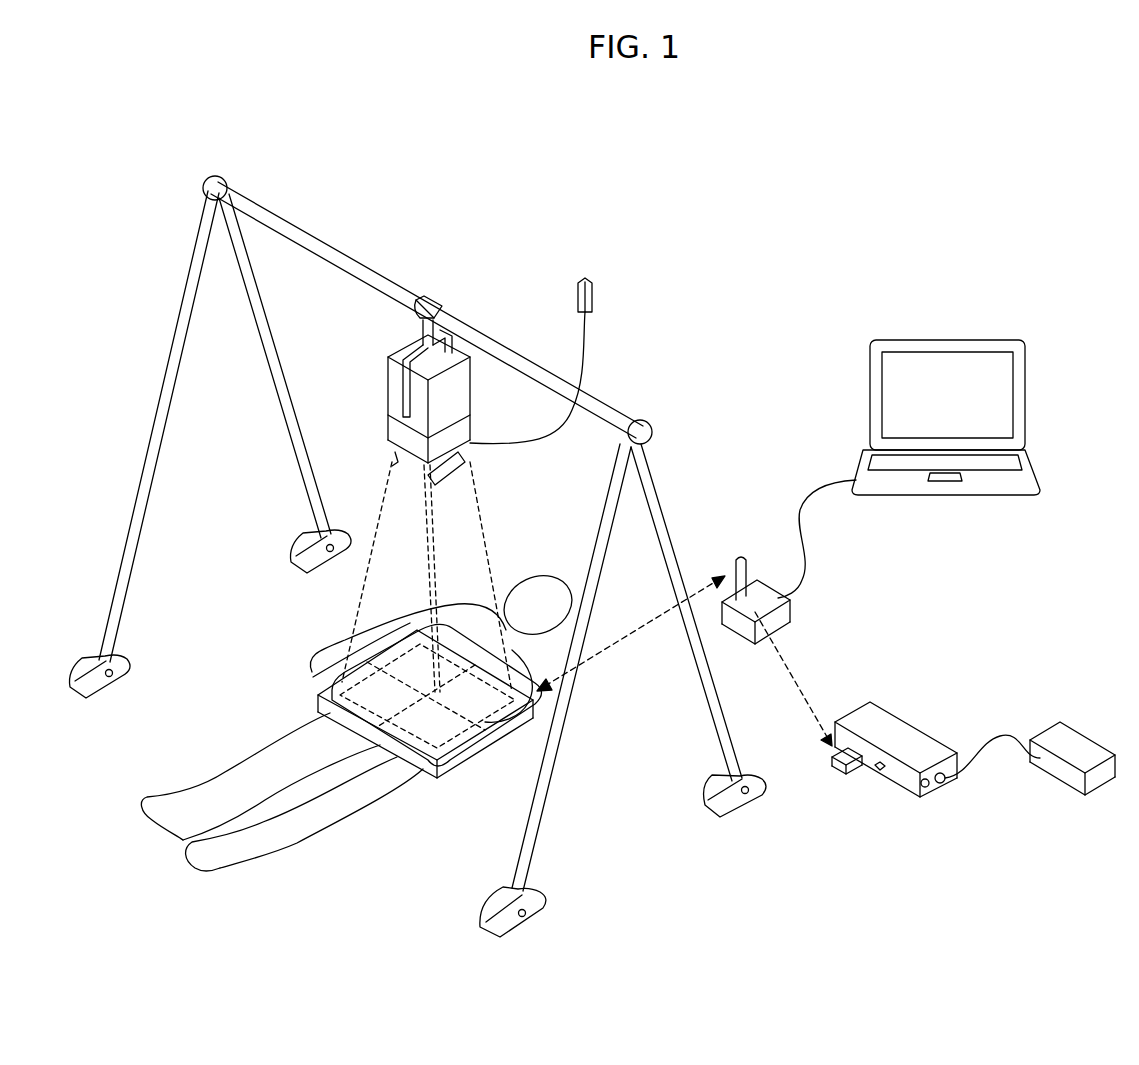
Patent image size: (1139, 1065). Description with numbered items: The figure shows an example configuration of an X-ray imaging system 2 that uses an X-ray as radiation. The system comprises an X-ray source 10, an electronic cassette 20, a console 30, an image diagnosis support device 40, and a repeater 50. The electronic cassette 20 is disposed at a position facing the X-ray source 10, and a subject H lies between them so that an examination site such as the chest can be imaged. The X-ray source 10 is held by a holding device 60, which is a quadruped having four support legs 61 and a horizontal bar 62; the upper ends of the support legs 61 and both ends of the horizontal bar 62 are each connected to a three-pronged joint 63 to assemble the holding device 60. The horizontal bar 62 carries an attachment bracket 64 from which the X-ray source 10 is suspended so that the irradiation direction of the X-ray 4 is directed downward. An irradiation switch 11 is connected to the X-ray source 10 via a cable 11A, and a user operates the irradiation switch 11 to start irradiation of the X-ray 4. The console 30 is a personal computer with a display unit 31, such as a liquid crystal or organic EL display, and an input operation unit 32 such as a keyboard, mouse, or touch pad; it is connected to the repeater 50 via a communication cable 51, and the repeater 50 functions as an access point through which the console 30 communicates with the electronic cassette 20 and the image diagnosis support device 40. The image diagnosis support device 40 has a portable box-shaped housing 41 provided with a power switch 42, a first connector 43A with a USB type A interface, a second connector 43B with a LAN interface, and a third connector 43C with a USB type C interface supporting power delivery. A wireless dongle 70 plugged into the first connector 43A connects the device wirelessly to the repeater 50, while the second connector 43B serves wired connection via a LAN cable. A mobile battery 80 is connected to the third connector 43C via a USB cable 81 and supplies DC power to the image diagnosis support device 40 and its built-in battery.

The X-ray imaging system 2 is at (840, 268).
The X-ray 4 is at (388, 496).
The X-ray source 10 is at (382, 348).
The irradiation switch 11 is at (592, 288).
The cable 11A is at (534, 446).
The electronic cassette 20 is at (306, 686).
The console 30 is at (971, 386).
The display unit 31 is at (1002, 396).
The input operation unit 32 is at (1022, 462).
The image diagnosis support device 40 is at (915, 767).
The housing 41 is at (930, 726).
The power switch 42 is at (930, 790).
The first connector 43A is at (858, 774).
The second connector 43B is at (878, 772).
The third connector 43C is at (944, 784).
The repeater 50 is at (808, 600).
The communication cable 51 is at (808, 494).
The holding device 60 is at (416, 534).
The support legs 61 is at (302, 478).
The horizontal bar 62 is at (338, 246).
The three-pronged joint 63 is at (226, 178).
The attachment bracket 64 is at (424, 298).
The wireless dongle 70 is at (832, 758).
The mobile battery 80 is at (1080, 736).
The USB cable 81 is at (1000, 736).
The subject H is at (540, 580).